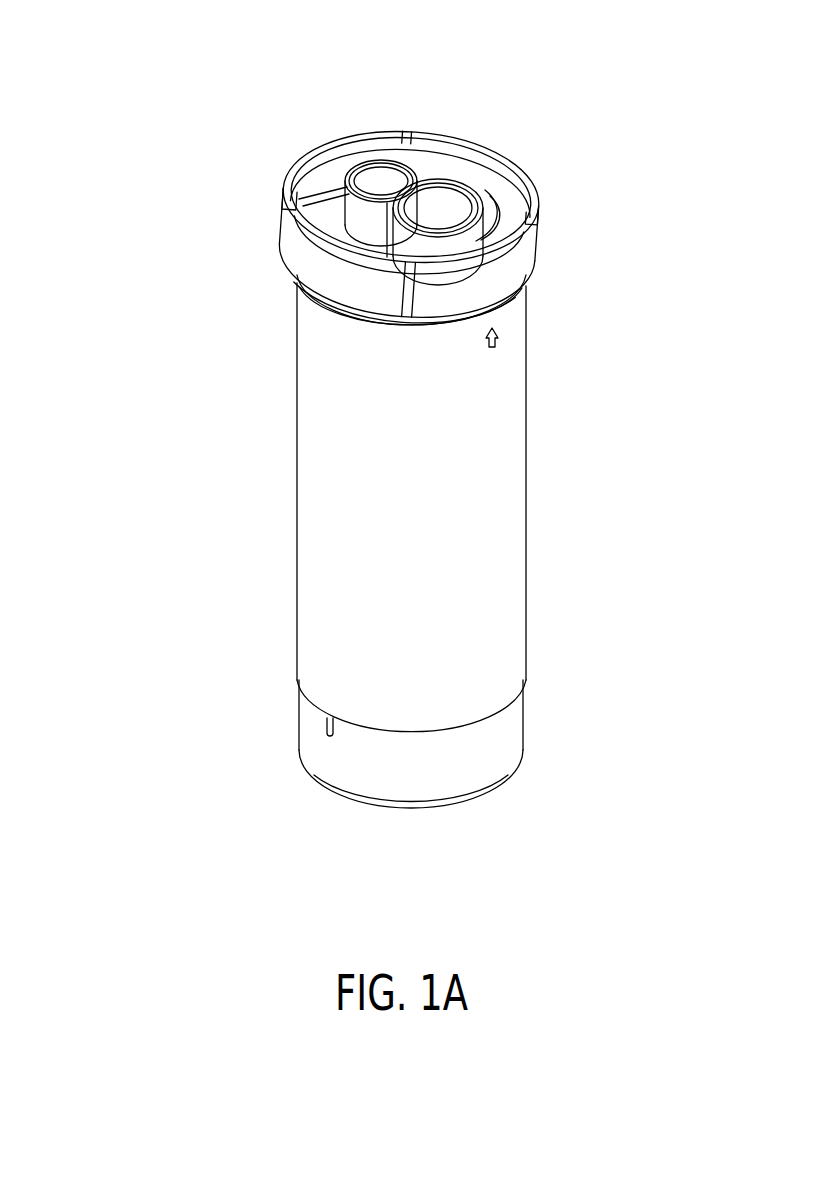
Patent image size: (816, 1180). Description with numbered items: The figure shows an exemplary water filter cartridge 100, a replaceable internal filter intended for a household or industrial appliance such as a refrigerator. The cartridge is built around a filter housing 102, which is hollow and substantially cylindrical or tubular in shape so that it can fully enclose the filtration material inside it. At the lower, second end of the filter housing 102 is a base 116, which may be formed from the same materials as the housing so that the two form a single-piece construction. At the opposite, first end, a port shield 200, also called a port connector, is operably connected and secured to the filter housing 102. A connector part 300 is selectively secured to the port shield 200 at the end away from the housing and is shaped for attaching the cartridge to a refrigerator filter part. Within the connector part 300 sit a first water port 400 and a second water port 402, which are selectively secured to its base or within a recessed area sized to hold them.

The water filter cartridge 100 is at (147, 83).
The filter housing 102 is at (433, 509).
The base 116 is at (428, 759).
The port shield 200 is at (322, 303).
The connector part 300 is at (482, 180).
The first water port 400 is at (443, 210).
The second water port 402 is at (372, 180).